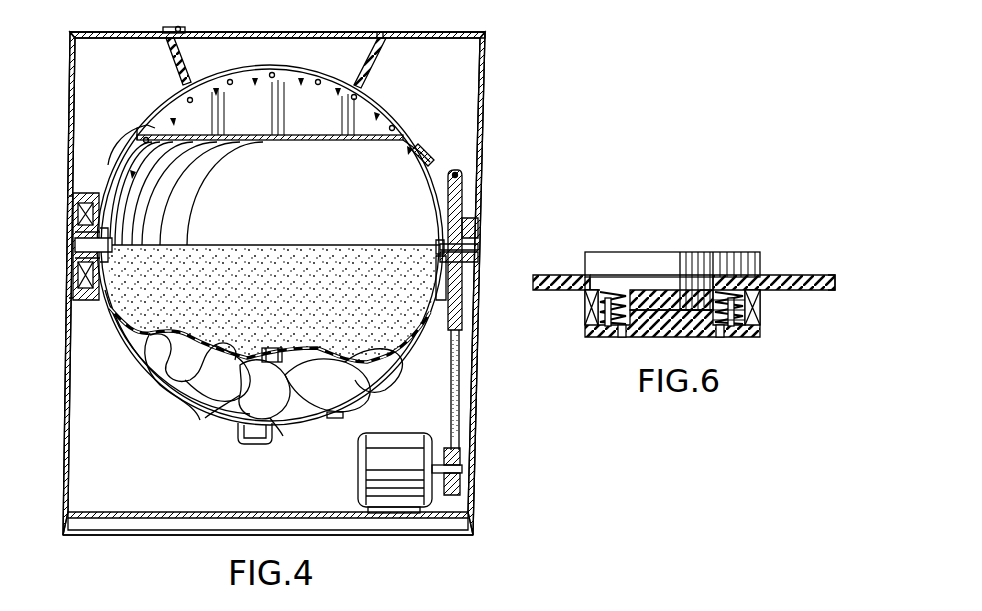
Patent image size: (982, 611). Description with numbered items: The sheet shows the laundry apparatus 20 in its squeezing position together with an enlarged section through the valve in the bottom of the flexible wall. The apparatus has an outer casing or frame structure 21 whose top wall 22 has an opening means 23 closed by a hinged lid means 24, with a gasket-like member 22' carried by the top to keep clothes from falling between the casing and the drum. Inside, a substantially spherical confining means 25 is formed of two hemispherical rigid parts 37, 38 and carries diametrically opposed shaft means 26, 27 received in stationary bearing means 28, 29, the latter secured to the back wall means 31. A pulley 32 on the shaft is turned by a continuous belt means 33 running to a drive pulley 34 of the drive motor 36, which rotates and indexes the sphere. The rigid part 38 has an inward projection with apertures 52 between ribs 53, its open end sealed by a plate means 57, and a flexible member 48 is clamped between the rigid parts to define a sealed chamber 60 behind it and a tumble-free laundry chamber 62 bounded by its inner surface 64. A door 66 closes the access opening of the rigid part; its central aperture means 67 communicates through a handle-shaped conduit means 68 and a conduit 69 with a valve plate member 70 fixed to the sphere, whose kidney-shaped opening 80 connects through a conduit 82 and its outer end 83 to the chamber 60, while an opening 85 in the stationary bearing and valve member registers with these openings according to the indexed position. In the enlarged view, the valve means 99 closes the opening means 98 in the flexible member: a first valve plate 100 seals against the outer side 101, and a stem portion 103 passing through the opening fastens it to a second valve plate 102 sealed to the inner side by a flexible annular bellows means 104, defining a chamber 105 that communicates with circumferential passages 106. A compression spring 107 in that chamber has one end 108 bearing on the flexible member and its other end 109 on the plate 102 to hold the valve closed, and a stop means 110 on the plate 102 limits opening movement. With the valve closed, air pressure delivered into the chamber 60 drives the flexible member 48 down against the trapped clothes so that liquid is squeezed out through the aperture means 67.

In FIG. 4, the laundry apparatus 20 is at (497, 68).
In FIG. 4, the outer casing or frame structure 21 is at (485, 109).
In FIG. 4, the top wall 22 is at (417, 19).
In FIG. 4, the gasket-like member 22' is at (296, 63).
In FIG. 4, the opening means 23 is at (316, 38).
In FIG. 4, the hinged door or lid means 24 is at (234, 31).
In FIG. 4, the spherical confining means 25 is at (392, 386).
In FIG. 4, the shaft means 26 is at (476, 258).
In FIG. 4, the shaft means 27 is at (76, 262).
In FIG. 4, the stationary bearing means 28 is at (474, 227).
In FIG. 4, the stationary bearing means 29 is at (75, 288).
In FIG. 4, the back wall means 31 is at (64, 438).
In FIG. 4, the pulley 32 is at (460, 195).
In FIG. 4, the continuous belt means 33 is at (448, 400).
In FIG. 4, the drive pulley 34 is at (462, 481).
In FIG. 4, the drive motor 36 is at (372, 468).
In FIG. 4, the hemispherical rigid part 37 is at (395, 374).
In FIG. 4, the hemispherical rigid part 38 is at (433, 167).
In FIG. 4, the flexible member 48 is at (350, 262).
In FIG. 6, the flexible member 48 is at (793, 280).
In FIG. 4, the apertures 52 is at (250, 83).
In FIG. 4, the ribs 53 is at (168, 107).
In FIG. 4, the plate means 57 is at (397, 113).
In FIG. 4, the sealed closed chamber 60 is at (152, 311).
In FIG. 4, the laundry receiving chamber 62 is at (365, 388).
In FIG. 6, the inner surface 64 is at (820, 293).
In FIG. 4, the door 66 is at (303, 427).
In FIG. 4, the central aperture means 67 is at (270, 414).
In FIG. 4, the conduit means 68 is at (258, 442).
In FIG. 4, the conduit 69 is at (148, 378).
In FIG. 4, the valve plate member 70 is at (170, 192).
In FIG. 4, the kidney shaped opening 80 is at (91, 203).
In FIG. 4, the conduit 82 is at (126, 147).
In FIG. 4, the outer end 83 is at (150, 135).
In FIG. 4, the opening 85 is at (78, 213).
In FIG. 6, the opening means 98 is at (717, 283).
In FIG. 4, the valve means 99 is at (272, 342).
In FIG. 6, the valve means 99 is at (732, 227).
In FIG. 6, the first valve plate 100 is at (610, 260).
In FIG. 6, the outer side 101 is at (558, 275).
In FIG. 6, the valve plate 102 is at (598, 327).
In FIG. 6, the stem portion 103 is at (670, 280).
In FIG. 6, the flexible annular bellows means 104 is at (758, 298).
In FIG. 6, the chamber 105 is at (598, 313).
In FIG. 6, the passages 106 is at (628, 337).
In FIG. 6, the compression spring 107 is at (760, 313).
In FIG. 6, the spring end 108 is at (585, 298).
In FIG. 6, the spring end 109 is at (738, 335).
In FIG. 6, the stop means 110 is at (613, 308).